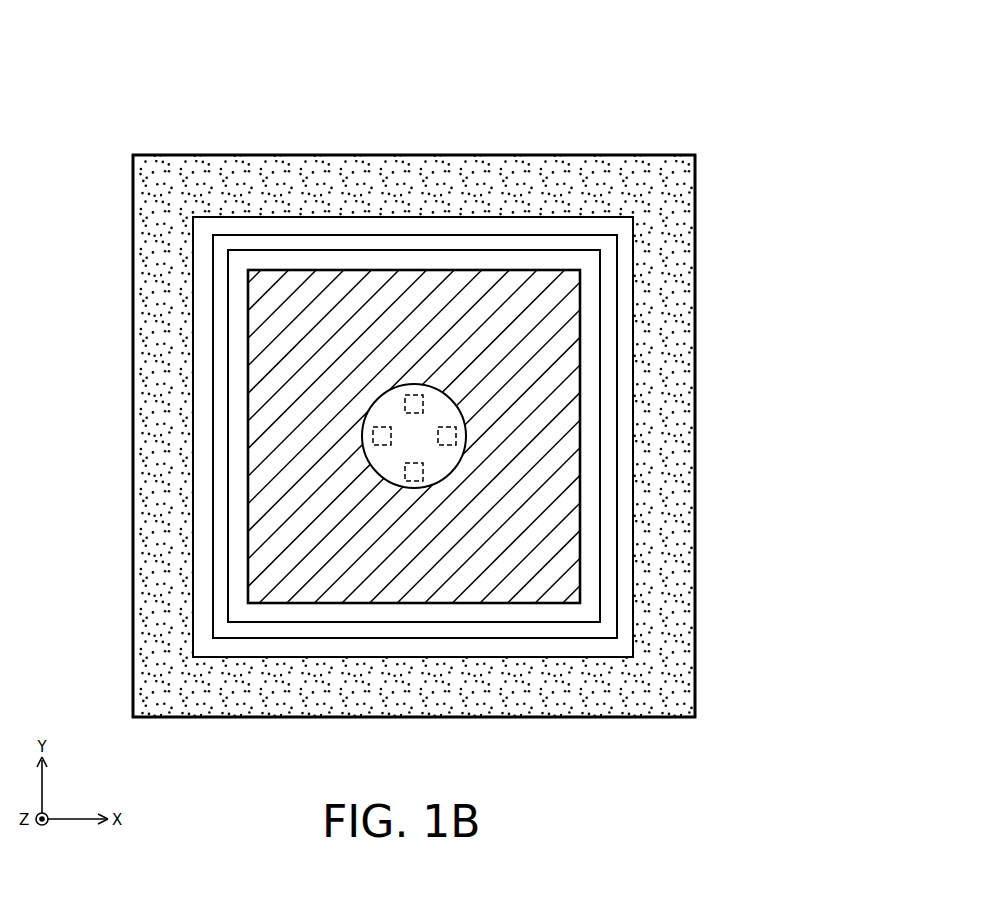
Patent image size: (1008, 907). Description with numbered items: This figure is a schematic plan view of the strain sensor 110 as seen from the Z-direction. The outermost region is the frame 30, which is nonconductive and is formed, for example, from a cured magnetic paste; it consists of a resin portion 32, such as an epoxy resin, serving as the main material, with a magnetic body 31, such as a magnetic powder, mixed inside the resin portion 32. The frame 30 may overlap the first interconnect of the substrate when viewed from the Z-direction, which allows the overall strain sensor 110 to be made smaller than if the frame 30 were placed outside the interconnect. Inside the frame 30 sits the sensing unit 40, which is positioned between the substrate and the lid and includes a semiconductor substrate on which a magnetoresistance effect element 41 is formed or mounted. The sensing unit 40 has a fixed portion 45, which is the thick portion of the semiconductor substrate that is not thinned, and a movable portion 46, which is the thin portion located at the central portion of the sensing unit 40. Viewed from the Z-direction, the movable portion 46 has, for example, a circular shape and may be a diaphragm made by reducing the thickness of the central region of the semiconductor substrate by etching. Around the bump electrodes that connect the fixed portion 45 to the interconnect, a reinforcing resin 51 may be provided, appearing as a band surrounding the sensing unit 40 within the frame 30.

The strain sensor 110 is at (623, 116).
The frame 30 is at (471, 436).
The magnetic body 31 is at (665, 222).
The resin portion 32 is at (660, 258).
The sensing unit 40 is at (565, 364).
The magnetoresistance effect element 41 is at (423, 402).
The fixed portion 45 is at (572, 540).
The movable portion 46 is at (445, 468).
The resin 51 is at (593, 587).